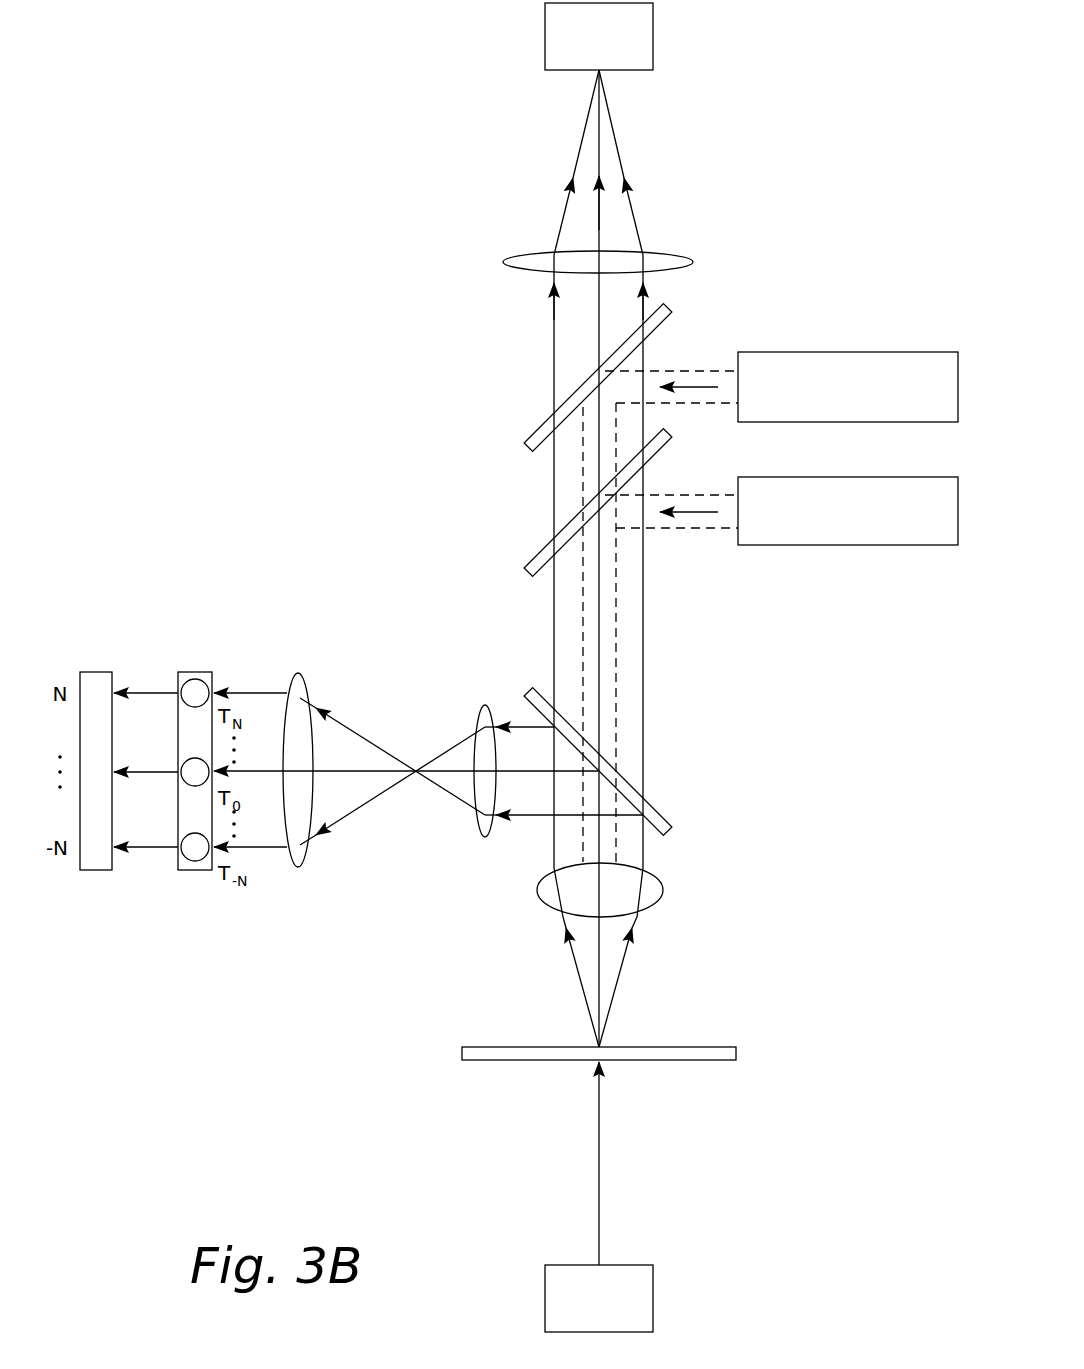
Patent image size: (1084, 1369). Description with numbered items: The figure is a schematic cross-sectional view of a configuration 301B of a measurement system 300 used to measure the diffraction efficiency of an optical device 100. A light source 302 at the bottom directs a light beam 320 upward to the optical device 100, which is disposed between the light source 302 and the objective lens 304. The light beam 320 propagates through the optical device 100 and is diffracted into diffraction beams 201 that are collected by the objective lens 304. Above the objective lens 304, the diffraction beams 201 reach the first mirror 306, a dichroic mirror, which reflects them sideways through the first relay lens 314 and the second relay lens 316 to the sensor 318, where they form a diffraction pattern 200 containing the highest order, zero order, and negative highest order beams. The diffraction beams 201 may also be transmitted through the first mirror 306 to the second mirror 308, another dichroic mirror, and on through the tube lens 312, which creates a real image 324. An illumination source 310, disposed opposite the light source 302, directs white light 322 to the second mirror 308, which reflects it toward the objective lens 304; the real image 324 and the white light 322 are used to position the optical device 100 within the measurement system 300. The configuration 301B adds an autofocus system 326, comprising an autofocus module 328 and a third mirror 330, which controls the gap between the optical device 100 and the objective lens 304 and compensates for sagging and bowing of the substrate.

The measurement system 300 is at (205, 50).
The configuration 301B is at (820, 180).
The real image 324 is at (580, 50).
The tube lens 312 is at (693, 262).
The second mirror 308 is at (528, 449).
The white light 322 is at (686, 370).
The illumination source 310 is at (880, 352).
The autofocus module 328 is at (880, 477).
The third mirror 330 is at (528, 574).
The autofocus system 326 is at (847, 577).
The first mirror 306 is at (668, 832).
The objective lens 304 is at (663, 890).
The first relay lens 314 is at (485, 705).
The second relay lens 316 is at (298, 673).
The sensor 318 is at (195, 672).
The diffraction pattern 200 is at (95, 672).
The diffraction beams 201 is at (652, 991).
The light beam 320 is at (599, 1178).
The light source 302 is at (580, 1311).
The optical device 100 is at (877, 1055).